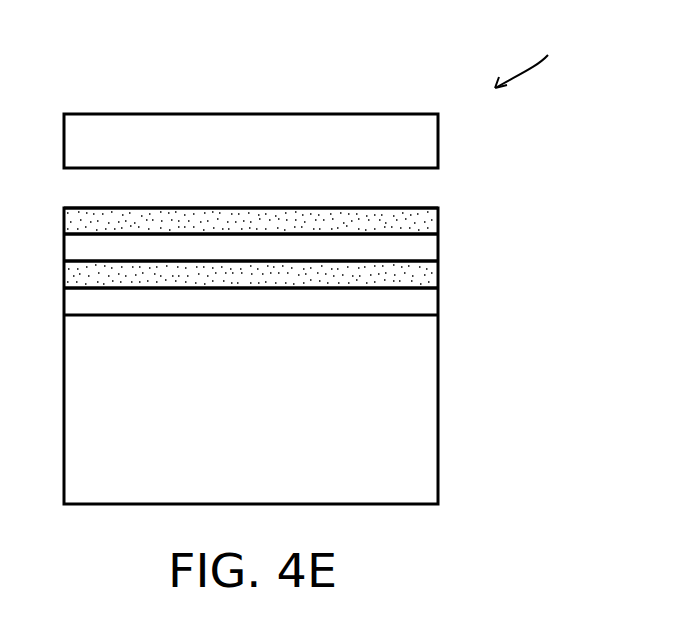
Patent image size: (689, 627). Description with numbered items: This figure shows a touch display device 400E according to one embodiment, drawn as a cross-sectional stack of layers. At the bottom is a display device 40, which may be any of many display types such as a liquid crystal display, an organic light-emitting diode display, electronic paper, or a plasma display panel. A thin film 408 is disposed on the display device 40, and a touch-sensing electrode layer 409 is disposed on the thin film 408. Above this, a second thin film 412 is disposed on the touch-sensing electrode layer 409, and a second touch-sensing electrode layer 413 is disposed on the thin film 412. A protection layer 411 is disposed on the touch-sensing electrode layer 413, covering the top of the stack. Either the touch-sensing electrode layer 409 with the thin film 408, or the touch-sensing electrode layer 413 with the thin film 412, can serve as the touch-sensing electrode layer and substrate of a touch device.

The touch display device 400E is at (542, 51).
The protection layer 411 is at (440, 142).
The touch-sensing electrode layer 413 is at (440, 220).
The thin film 412 is at (440, 247).
The touch-sensing electrode layer 409 is at (440, 274).
The thin film 408 is at (440, 301).
The display device 40 is at (440, 410).